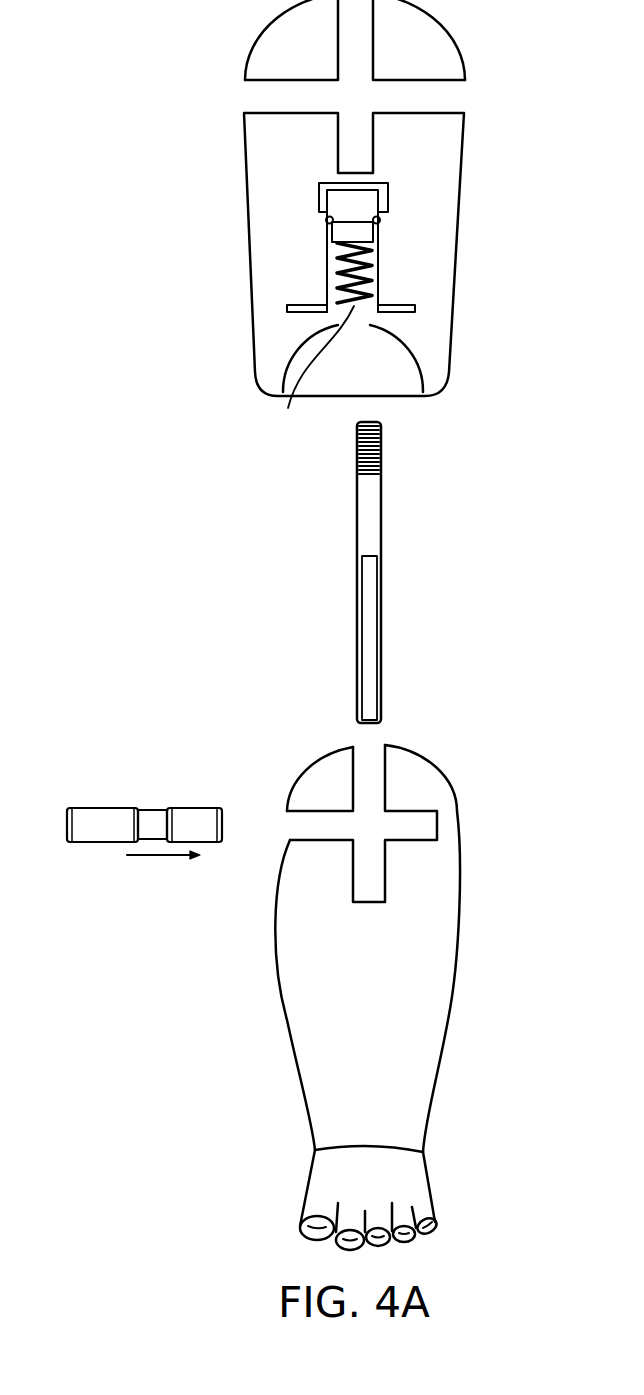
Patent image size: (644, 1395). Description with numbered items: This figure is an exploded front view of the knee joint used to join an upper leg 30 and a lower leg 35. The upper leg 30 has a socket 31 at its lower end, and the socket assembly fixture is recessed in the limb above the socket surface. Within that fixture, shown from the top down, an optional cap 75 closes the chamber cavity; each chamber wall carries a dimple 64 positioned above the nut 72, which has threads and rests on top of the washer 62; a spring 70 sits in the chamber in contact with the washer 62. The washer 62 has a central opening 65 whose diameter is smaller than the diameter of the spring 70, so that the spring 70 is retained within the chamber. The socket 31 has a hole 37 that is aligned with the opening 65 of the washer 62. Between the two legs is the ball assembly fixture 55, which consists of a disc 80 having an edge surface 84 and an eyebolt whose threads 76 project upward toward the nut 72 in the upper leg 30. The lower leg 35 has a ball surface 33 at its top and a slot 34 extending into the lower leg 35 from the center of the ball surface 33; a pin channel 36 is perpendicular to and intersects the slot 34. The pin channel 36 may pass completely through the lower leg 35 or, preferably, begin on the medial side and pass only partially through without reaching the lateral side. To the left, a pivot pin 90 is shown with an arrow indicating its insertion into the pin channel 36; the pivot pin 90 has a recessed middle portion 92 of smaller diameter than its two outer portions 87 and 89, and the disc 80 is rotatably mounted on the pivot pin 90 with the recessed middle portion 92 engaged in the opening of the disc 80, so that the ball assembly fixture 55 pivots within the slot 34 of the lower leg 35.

The upper leg 30 is at (201, 218).
The socket 31 is at (390, 386).
The ball surface 33 is at (410, 775).
The slot 34 is at (372, 738).
The lower leg 35 is at (246, 1005).
The pin channel 36 is at (305, 827).
The hole 37 is at (315, 371).
The ball assembly fixture 55 is at (201, 532).
The washer 62 is at (412, 313).
The dimple 64 is at (381, 220).
The opening 65 is at (345, 310).
The spring 70 is at (335, 246).
The nut 72 is at (366, 232).
The cap 75 is at (372, 182).
The threads 76 is at (357, 462).
The disc 80 is at (382, 623).
The edge surface 84 is at (368, 578).
The outer portion 87 is at (78, 827).
The outer portion 89 is at (207, 828).
The pivot pin 90 is at (94, 703).
The recessed middle portion 92 is at (155, 825).